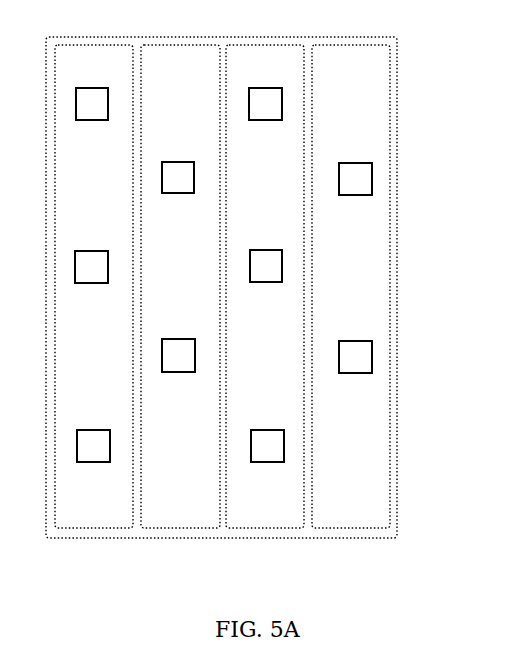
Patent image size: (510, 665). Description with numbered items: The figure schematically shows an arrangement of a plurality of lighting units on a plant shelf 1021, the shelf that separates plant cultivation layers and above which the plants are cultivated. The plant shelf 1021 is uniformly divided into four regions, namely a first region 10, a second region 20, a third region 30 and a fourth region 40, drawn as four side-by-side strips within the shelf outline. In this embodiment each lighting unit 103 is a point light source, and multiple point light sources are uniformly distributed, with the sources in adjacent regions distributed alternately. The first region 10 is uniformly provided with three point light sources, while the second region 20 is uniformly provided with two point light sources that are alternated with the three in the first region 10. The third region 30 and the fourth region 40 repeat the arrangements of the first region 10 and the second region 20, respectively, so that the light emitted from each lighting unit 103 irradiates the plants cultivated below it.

The first region 10 is at (86, 511).
The second region 20 is at (184, 511).
The third region 30 is at (265, 511).
The fourth region 40 is at (347, 511).
The plant shelf 1021 is at (392, 163).
The lighting unit 103 is at (354, 353).